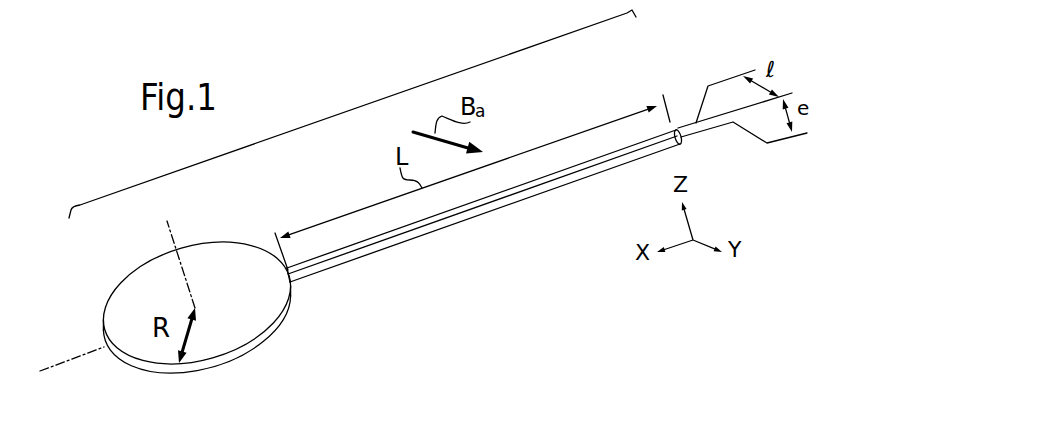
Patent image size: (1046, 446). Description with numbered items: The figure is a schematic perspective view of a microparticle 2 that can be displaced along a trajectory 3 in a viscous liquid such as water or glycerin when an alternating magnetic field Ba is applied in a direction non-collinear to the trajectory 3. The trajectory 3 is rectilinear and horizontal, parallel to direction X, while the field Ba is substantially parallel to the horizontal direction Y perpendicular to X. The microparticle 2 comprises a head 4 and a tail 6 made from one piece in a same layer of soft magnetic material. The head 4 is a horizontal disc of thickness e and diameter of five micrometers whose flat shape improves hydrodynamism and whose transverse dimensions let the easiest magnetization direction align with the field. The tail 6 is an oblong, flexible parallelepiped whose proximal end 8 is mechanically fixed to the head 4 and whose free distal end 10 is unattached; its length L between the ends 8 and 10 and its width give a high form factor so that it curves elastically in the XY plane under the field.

The microparticle 2 is at (358, 110).
The trajectory 3 is at (77, 357).
The head 4 is at (267, 333).
The tail 6 is at (433, 228).
The proximal end 8 is at (300, 277).
The free distal end 10 is at (697, 136).